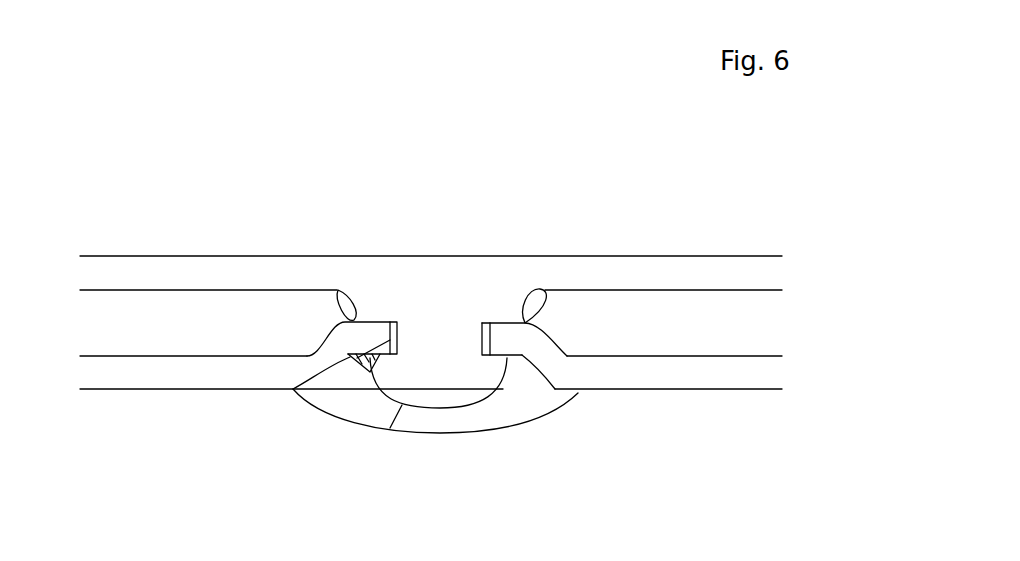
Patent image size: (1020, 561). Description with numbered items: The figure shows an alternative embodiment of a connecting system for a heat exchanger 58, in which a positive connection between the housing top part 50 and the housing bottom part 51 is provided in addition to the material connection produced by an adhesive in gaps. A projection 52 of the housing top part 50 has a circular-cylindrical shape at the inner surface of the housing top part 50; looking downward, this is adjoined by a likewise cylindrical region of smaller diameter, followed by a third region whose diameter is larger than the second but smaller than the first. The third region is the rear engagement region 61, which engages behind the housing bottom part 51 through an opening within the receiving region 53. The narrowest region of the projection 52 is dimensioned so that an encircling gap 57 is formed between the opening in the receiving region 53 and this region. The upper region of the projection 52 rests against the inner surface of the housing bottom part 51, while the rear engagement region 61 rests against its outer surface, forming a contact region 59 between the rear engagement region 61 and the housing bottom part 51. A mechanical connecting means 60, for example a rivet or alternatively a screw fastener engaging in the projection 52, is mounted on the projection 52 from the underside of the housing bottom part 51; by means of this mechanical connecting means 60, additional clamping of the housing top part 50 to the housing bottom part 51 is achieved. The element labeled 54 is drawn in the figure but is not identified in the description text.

The housing top part 50 is at (209, 266).
The housing bottom part 51 is at (168, 372).
The projection 52 is at (428, 300).
The receiving region 53 is at (389, 336).
The left hook 54 is at (338, 290).
The encircling gap 57 is at (502, 388).
The heat exchanger 58 is at (112, 226).
The contact region 59 is at (385, 355).
The mechanical connecting means 60 is at (434, 418).
The rear engagement region 61 is at (484, 372).